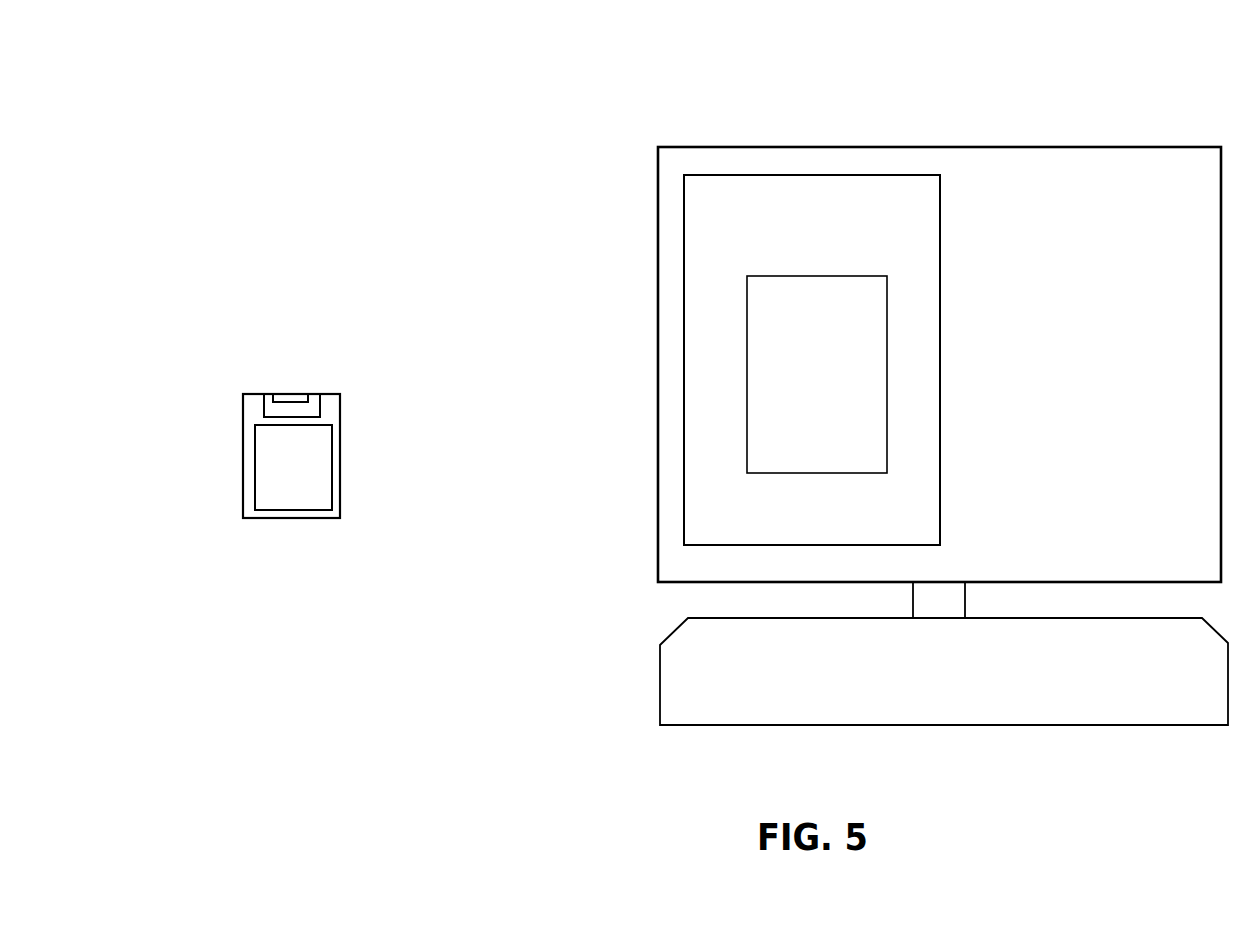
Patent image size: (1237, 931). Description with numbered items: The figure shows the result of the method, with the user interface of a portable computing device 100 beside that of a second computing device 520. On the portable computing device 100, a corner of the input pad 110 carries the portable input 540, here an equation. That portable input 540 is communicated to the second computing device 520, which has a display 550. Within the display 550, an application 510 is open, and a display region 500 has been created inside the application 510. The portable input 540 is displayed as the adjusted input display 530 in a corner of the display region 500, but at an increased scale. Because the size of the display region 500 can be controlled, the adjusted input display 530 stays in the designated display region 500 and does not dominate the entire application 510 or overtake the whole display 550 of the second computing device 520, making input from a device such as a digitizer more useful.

The portable computing device 100 is at (272, 518).
The input pad 110 is at (312, 467).
The portable input 540 is at (315, 510).
The display 550 is at (1053, 147).
The second computing device 520 is at (659, 670).
The application 510 is at (810, 175).
The display region 500 is at (813, 276).
The adjusted input display 530 is at (785, 453).